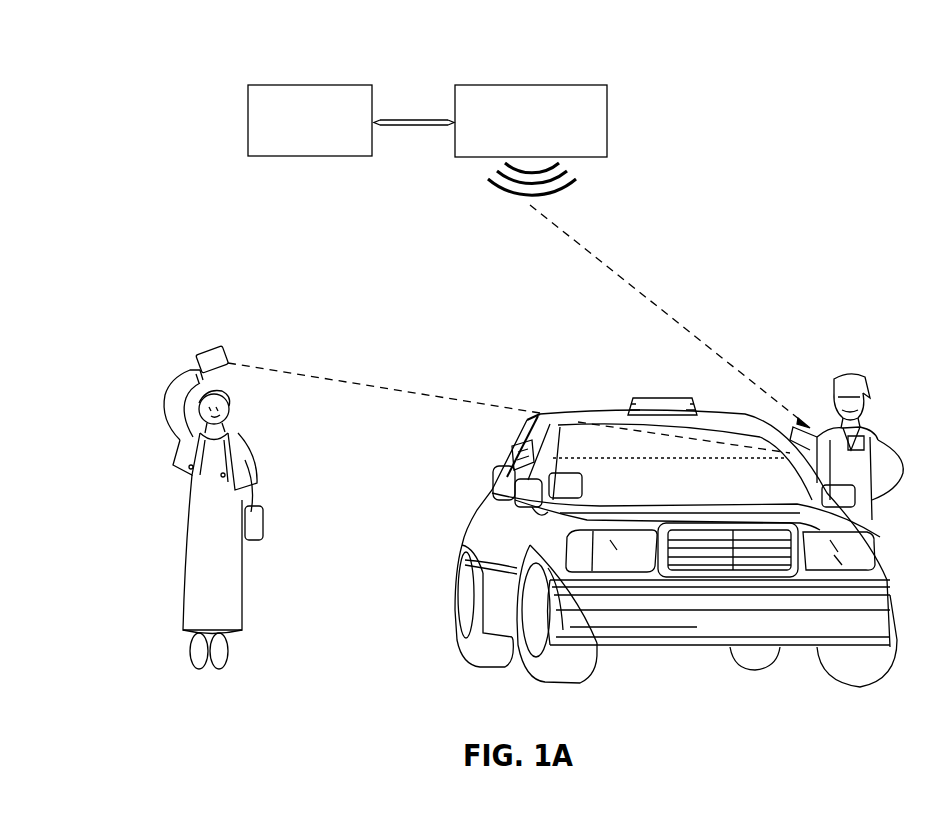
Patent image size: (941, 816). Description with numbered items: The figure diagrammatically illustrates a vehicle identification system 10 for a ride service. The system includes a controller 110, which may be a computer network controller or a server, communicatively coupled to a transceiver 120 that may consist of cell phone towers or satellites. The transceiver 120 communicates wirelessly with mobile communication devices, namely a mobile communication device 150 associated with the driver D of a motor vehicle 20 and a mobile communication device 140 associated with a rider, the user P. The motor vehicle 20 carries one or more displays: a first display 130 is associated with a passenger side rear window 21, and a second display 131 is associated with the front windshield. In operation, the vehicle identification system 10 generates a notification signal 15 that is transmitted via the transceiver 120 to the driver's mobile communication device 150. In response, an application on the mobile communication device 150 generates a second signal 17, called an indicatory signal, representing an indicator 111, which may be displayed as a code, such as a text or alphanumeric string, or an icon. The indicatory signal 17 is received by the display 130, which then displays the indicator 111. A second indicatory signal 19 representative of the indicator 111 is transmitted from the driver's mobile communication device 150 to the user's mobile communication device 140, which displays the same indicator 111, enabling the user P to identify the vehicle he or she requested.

The vehicle identification system 10 is at (206, 64).
The controller 110 is at (351, 120).
The transceiver 120 is at (531, 140).
The notification signal 15 is at (675, 320).
The second indicatory signal 19 is at (375, 388).
The second signal (indicatory signal) 17 is at (723, 458).
The user P is at (155, 380).
The mobile communication device 140 is at (206, 350).
The indicator 111 is at (230, 375).
The motor vehicle 20 is at (445, 560).
The passenger side rear window 21 is at (527, 423).
The first display 130 is at (510, 450).
The second display 131 is at (493, 471).
The driver D is at (872, 370).
The mobile communication device 150 is at (860, 432).